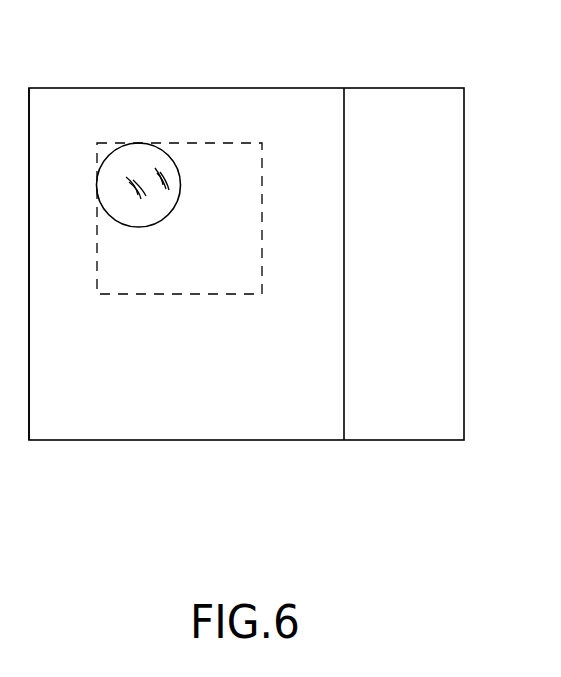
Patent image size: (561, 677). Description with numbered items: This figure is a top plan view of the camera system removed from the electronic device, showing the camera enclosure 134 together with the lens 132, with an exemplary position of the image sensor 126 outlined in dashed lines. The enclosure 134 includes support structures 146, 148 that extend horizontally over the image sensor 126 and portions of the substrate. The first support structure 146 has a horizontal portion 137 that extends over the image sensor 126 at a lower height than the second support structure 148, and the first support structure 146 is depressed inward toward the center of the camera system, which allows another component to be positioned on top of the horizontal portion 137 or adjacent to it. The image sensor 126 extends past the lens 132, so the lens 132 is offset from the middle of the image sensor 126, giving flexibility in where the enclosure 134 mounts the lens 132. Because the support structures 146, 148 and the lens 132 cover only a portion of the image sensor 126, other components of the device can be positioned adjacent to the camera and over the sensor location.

The image sensor 126 is at (262, 212).
The lens 132 is at (148, 158).
The camera enclosure 134 is at (210, 405).
The horizontal portion 137 is at (417, 425).
The first support structure 146 is at (289, 290).
The second support structure 148 is at (75, 183).